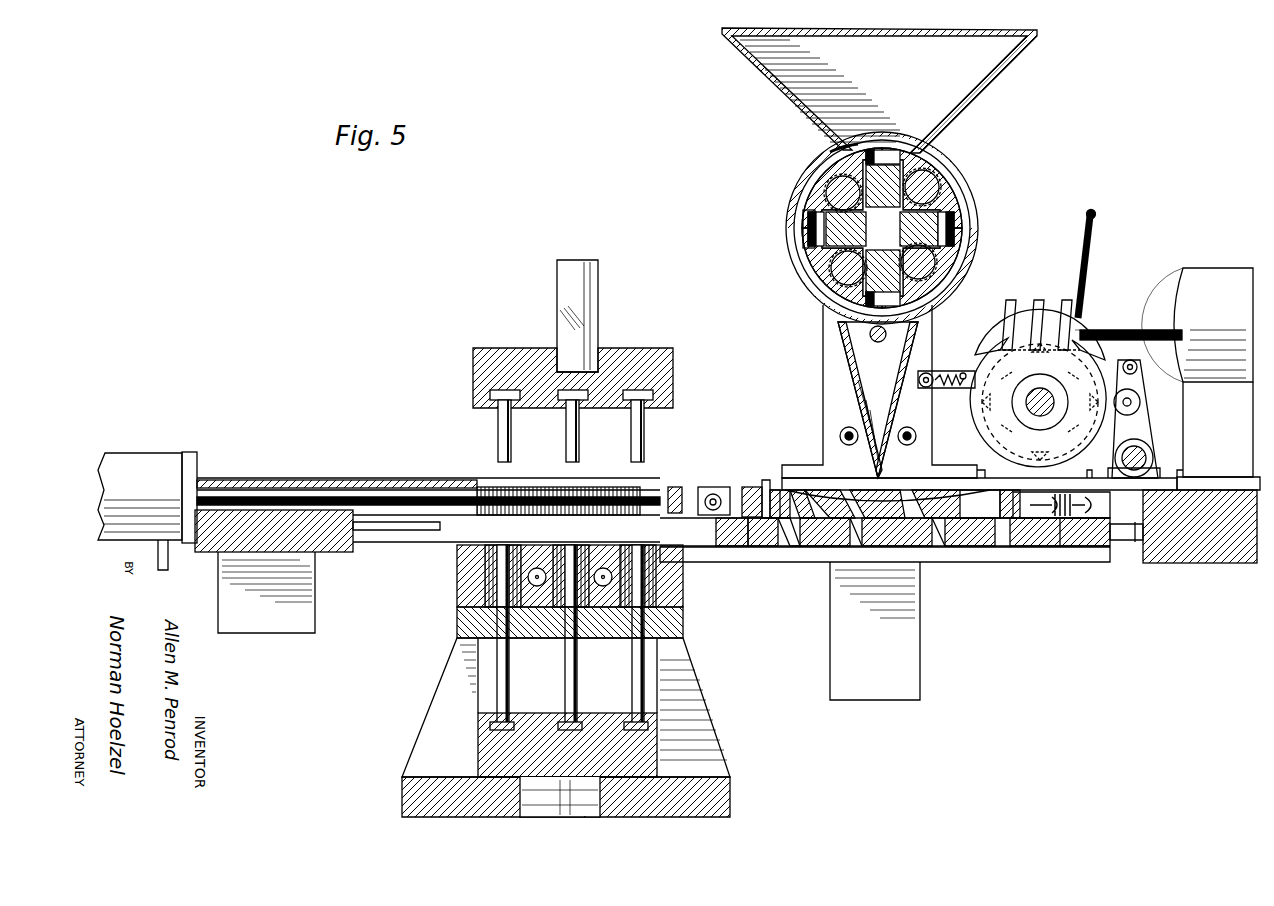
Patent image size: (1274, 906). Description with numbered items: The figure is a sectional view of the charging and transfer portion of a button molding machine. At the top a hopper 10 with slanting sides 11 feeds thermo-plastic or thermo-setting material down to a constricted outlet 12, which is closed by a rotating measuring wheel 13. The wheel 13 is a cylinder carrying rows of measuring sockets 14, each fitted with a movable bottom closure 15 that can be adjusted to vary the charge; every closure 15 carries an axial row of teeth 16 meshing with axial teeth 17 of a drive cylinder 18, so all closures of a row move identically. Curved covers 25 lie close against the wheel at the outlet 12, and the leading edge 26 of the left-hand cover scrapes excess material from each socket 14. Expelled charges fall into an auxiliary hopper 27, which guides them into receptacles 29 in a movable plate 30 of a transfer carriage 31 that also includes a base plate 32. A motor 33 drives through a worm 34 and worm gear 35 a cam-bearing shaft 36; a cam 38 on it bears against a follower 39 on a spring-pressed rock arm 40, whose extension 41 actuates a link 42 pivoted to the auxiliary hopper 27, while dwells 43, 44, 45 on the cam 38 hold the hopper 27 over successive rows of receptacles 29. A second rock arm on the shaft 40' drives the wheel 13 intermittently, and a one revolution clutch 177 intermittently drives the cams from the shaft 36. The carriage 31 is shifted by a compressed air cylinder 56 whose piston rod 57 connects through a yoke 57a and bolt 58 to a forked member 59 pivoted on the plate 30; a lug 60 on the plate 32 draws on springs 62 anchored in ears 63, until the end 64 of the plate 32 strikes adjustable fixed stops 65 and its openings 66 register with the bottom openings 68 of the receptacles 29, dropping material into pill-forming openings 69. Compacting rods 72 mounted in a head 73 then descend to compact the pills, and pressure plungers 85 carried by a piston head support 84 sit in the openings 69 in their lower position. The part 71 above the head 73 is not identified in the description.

The hopper 10 is at (1035, 42).
The slanting sides 11 is at (1003, 78).
The constricted outlet 12 is at (905, 140).
The measuring wheel 13 is at (952, 200).
The measuring sockets 14 is at (882, 150).
The bottom closures 15 is at (800, 228).
The axial row of teeth 16 is at (881, 228).
The axial teeth 17 is at (940, 190).
The drive cylinder 18 is at (935, 172).
The curved covers 25 is at (960, 220).
The leading edge 26 is at (855, 150).
The auxiliary hopper 27 is at (855, 360).
The receptacles 29 is at (880, 505).
The movable plate 30 is at (835, 510).
The transfer carriage 31 is at (980, 548).
The base plate 32 is at (1020, 548).
The motor 33 is at (1201, 415).
The worm 34 is at (1040, 290).
The worm gear 35 is at (978, 428).
The cam-bearing shaft 36 is at (1054, 402).
The cam 38 is at (966, 346).
The follower 39 is at (1140, 402).
The rock arm 40 is at (1148, 451).
The shaft 40' is at (1172, 457).
The extension 41 is at (1137, 368).
The link 42 is at (1105, 362).
The dwell 43 is at (975, 400).
The dwell 44 is at (1124, 464).
The dwell 45 is at (990, 332).
The compressed air cylinder 56 is at (163, 455).
The piston rod 57 is at (394, 486).
The yoke 57a is at (674, 485).
The bolt 58 is at (714, 494).
The forked member 59 is at (744, 485).
The lug 60 is at (1048, 492).
The springs 62 is at (1065, 548).
The ears 63 is at (1108, 512).
The end of base plate 64 is at (728, 546).
The adjustable fixed stops 65 is at (430, 535).
The openings 66 is at (775, 548).
The bottom openings 68 is at (818, 498).
The pill-forming openings 69 is at (510, 545).
The punch 71 is at (600, 290).
The compacting rods 72 is at (511, 428).
The head 73 is at (675, 357).
The piston head support 84 is at (640, 742).
The pressure plungers 85 is at (660, 630).
The one revolution clutch 177 is at (1100, 330).